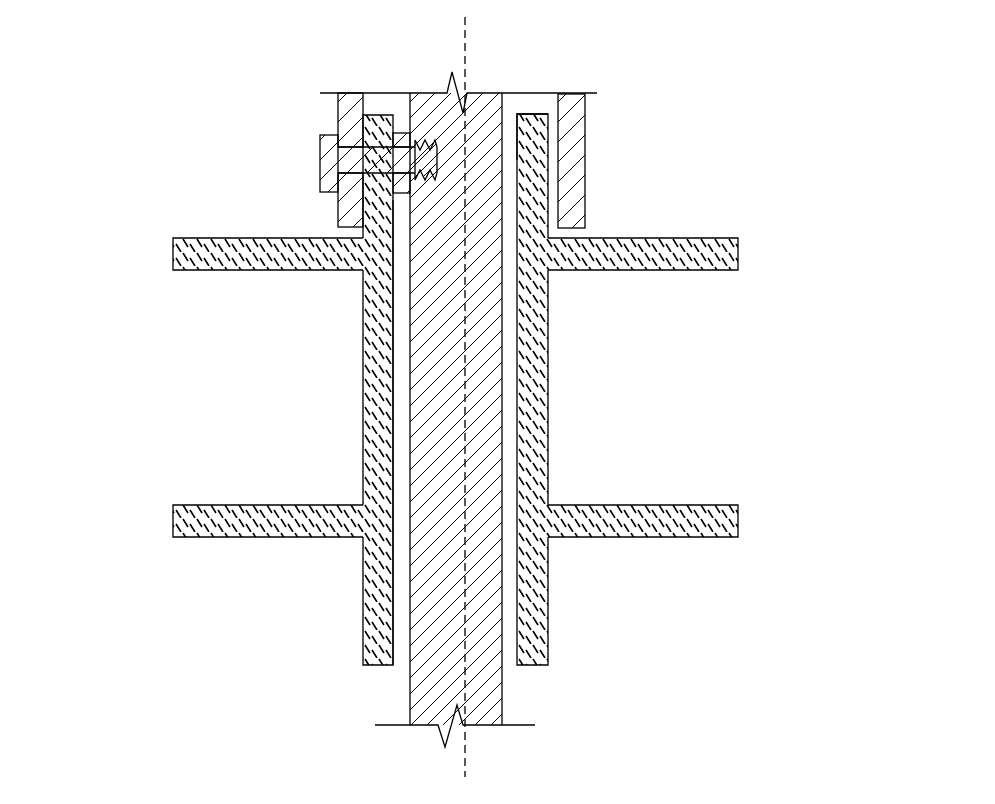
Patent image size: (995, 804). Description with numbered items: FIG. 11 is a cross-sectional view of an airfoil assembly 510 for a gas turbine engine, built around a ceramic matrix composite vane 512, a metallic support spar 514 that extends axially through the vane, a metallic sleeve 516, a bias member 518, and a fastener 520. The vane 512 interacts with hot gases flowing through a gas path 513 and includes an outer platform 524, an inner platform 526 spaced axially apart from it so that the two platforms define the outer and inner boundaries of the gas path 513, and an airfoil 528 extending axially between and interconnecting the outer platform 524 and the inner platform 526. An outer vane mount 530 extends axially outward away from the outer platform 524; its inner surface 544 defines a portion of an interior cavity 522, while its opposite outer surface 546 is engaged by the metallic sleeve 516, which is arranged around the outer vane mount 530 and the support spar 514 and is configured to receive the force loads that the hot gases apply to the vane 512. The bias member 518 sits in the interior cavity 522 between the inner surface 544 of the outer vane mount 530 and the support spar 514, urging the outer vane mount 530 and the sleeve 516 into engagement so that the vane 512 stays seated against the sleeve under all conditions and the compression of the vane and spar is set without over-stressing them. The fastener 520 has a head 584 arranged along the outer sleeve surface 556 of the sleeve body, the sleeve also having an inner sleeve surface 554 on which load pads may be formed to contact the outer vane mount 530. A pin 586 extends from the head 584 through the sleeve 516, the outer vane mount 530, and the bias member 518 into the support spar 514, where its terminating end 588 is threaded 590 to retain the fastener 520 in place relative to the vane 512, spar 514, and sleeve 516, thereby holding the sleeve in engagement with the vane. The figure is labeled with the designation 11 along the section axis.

The airfoil assembly 510 is at (142, 110).
The ceramic matrix composite vane 512 is at (688, 347).
The gas path 513 is at (275, 431).
The metallic support spar 514 is at (480, 82).
The metallic sleeve 516 is at (629, 137).
The bias member 518 is at (399, 112).
The fastener 520 is at (292, 150).
The interior cavity 522 is at (398, 675).
The outer platform 524 is at (753, 246).
The inner platform 526 is at (750, 527).
The airfoil 528 is at (575, 413).
The outer vane mount 530 is at (534, 102).
The inner surface 544 is at (548, 153).
The outer surface 546 is at (548, 153).
The inner sleeve surface 554 is at (408, 230).
The outer sleeve surface 556 is at (336, 211).
The head 584 is at (306, 181).
The pin 586 is at (426, 130).
The terminating end 588 is at (413, 176).
The threads 590 is at (432, 150).
The section line 11 is at (465, 757).